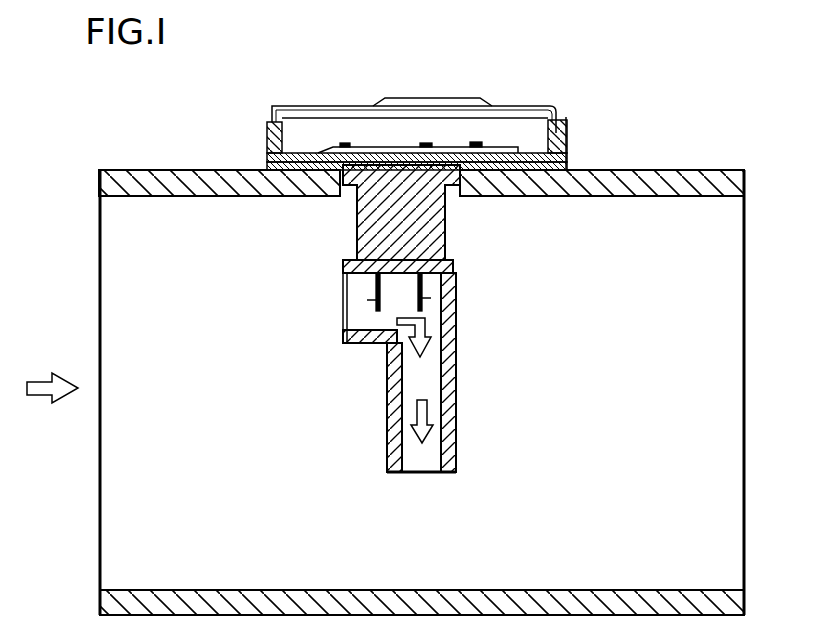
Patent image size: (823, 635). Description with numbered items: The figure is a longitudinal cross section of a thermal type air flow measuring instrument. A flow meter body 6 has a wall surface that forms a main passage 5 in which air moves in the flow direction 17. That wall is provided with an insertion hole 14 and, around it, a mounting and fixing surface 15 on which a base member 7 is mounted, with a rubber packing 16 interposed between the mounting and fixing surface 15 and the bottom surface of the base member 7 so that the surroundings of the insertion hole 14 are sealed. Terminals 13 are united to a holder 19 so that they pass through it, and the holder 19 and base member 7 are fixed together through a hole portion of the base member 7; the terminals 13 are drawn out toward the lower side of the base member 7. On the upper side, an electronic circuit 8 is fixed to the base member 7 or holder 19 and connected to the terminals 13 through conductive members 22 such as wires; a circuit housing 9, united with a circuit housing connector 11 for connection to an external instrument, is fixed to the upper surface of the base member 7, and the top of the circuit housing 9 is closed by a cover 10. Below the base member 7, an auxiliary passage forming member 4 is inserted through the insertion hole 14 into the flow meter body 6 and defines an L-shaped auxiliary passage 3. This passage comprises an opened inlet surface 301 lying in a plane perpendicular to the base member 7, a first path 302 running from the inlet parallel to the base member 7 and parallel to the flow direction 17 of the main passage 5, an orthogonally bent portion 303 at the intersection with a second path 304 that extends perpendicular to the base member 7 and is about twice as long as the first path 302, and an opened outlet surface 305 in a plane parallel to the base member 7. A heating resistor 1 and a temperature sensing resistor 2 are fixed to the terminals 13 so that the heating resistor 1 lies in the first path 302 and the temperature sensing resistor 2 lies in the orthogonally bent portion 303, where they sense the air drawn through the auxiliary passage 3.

The heating resistor 1 is at (345, 318).
The temperature sensing resistor 2 is at (455, 290).
The auxiliary passage 3 is at (443, 402).
The auxiliary passage forming member 4 is at (458, 440).
The main passage 5 is at (697, 255).
The flow meter body 6 is at (720, 170).
The base member 7 is at (568, 158).
The electronic circuit 8 is at (503, 147).
The circuit housing 9 is at (563, 133).
The cover 10 is at (273, 105).
The circuit housing connector 11 is at (467, 97).
The terminals 13 is at (345, 295).
The insertion hole 14 is at (330, 188).
The mounting and fixing surface 15 is at (266, 160).
The rubber packing 16 is at (568, 167).
The flow direction 17 is at (44, 400).
The holder 19 is at (446, 219).
The conductive members 22 is at (318, 147).
The opened inlet surface 301 is at (345, 300).
The first path 302 is at (345, 332).
The orthogonally bent portion 303 is at (455, 305).
The second path 304 is at (455, 365).
The opened outlet surface 305 is at (430, 473).